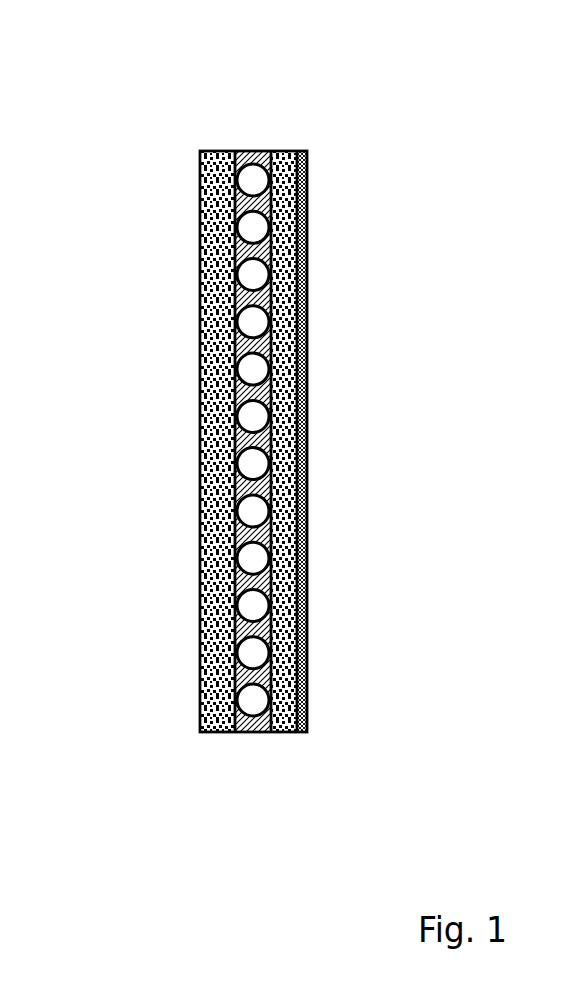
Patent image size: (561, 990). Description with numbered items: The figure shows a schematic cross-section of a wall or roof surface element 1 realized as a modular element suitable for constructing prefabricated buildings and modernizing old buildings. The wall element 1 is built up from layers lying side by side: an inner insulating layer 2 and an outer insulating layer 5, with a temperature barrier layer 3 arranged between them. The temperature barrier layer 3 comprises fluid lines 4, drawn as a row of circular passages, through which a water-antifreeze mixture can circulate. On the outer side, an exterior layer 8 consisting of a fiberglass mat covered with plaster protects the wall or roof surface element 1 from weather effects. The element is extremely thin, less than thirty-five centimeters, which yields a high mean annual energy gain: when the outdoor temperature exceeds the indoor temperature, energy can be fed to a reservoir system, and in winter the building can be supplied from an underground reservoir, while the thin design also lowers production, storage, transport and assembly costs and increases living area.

The wall or roof surface element 1 is at (108, 815).
The inner insulating layer 2 is at (215, 173).
The temperature barrier layer 3 is at (255, 152).
The fluid lines 4 is at (252, 702).
The outer insulating layer 5 is at (277, 152).
The exterior layer 8 is at (307, 172).